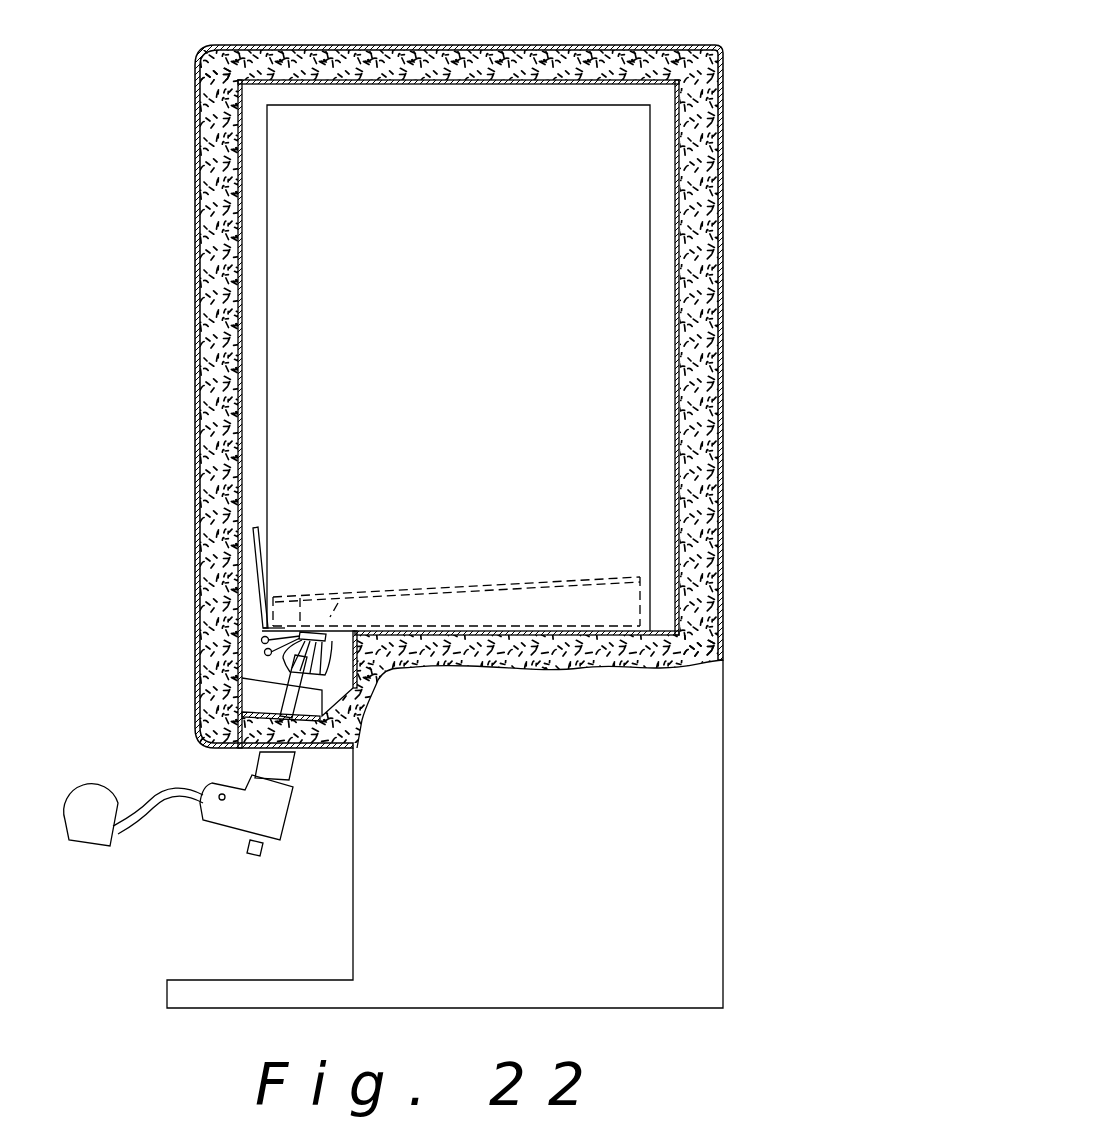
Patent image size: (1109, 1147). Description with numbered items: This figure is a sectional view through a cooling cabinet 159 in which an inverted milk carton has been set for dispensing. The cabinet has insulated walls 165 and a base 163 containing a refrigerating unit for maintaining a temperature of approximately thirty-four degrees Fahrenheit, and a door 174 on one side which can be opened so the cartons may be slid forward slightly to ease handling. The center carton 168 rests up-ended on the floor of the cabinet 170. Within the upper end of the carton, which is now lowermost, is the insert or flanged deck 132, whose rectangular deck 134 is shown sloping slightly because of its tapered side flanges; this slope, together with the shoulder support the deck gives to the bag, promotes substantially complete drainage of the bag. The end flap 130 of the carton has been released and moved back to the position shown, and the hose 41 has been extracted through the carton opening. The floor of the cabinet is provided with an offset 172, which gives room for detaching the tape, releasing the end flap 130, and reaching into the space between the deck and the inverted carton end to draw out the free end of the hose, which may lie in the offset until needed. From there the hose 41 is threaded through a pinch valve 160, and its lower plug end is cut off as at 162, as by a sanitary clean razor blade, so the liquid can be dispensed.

The cooling cabinet 159 is at (491, 44).
The insulated walls 165 is at (707, 181).
The door 174 is at (197, 268).
The center carton 168 is at (458, 368).
The end flap 130 is at (258, 547).
The insert or flanged deck 132 is at (448, 583).
The rectangular deck 134 is at (530, 580).
The hose 41 is at (290, 692).
The offset 172 is at (347, 678).
The floor of the cabinet 170 is at (533, 630).
The pinch valve 160 is at (238, 813).
The cut-off plug end 162 is at (253, 852).
The base 163 is at (445, 834).